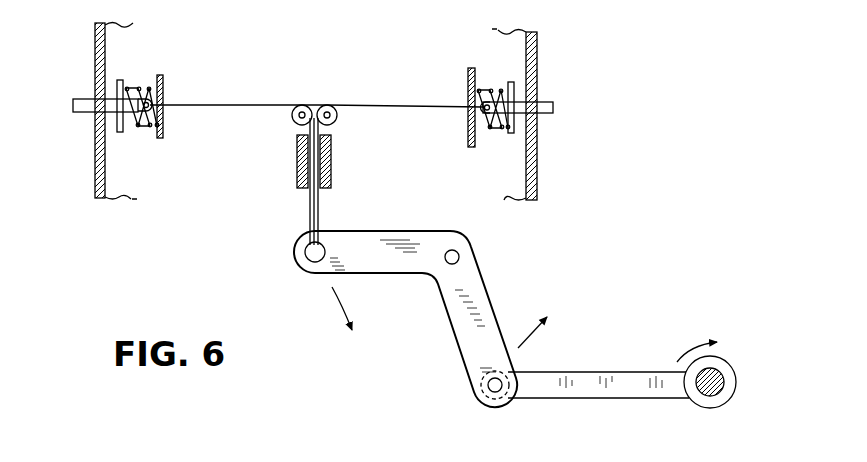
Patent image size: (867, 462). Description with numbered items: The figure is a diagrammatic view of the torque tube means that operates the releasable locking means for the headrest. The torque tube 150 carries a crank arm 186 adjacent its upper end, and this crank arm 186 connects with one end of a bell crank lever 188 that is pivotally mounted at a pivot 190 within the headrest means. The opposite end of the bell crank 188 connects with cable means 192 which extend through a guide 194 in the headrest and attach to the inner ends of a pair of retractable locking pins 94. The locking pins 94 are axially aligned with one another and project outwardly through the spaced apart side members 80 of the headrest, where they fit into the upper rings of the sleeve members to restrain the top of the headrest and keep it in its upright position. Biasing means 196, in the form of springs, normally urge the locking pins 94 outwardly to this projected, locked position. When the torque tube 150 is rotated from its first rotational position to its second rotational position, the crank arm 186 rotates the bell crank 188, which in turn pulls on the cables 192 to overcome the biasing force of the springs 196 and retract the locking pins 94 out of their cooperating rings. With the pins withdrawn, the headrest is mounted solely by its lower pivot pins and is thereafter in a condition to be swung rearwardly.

The side member 80 is at (536, 52).
The locking pin 94 is at (73, 112).
The biasing means 196 is at (141, 92).
The guide 194 is at (331, 158).
The cable means 192 is at (320, 214).
The bell crank lever 188 is at (488, 334).
The pivot 190 is at (460, 256).
The crank arm 186 is at (617, 387).
The torque tube 150 is at (712, 405).